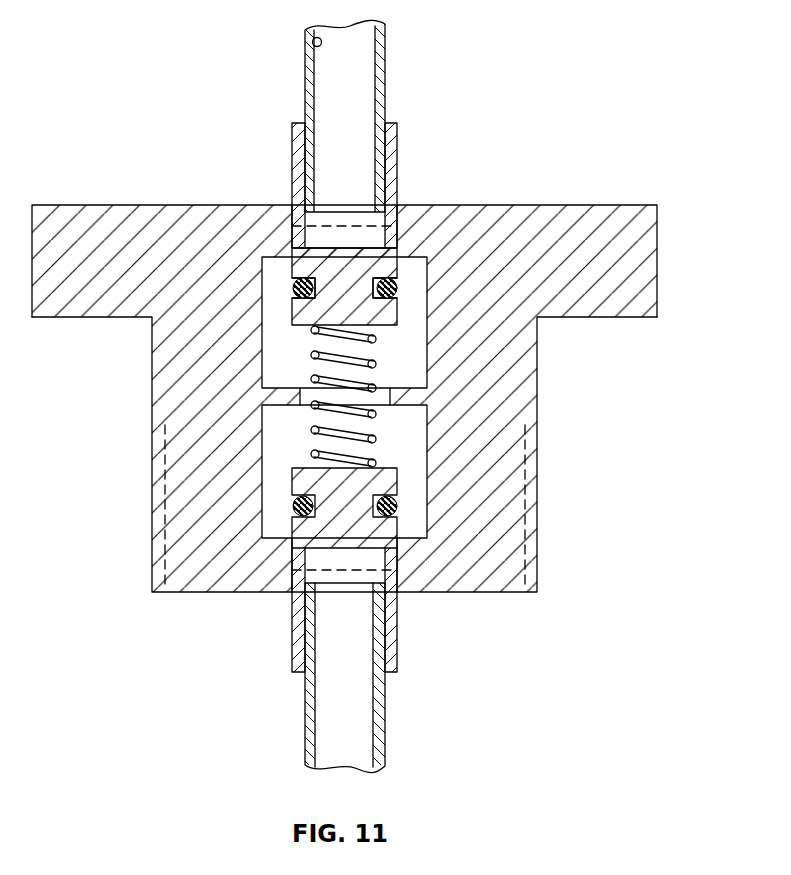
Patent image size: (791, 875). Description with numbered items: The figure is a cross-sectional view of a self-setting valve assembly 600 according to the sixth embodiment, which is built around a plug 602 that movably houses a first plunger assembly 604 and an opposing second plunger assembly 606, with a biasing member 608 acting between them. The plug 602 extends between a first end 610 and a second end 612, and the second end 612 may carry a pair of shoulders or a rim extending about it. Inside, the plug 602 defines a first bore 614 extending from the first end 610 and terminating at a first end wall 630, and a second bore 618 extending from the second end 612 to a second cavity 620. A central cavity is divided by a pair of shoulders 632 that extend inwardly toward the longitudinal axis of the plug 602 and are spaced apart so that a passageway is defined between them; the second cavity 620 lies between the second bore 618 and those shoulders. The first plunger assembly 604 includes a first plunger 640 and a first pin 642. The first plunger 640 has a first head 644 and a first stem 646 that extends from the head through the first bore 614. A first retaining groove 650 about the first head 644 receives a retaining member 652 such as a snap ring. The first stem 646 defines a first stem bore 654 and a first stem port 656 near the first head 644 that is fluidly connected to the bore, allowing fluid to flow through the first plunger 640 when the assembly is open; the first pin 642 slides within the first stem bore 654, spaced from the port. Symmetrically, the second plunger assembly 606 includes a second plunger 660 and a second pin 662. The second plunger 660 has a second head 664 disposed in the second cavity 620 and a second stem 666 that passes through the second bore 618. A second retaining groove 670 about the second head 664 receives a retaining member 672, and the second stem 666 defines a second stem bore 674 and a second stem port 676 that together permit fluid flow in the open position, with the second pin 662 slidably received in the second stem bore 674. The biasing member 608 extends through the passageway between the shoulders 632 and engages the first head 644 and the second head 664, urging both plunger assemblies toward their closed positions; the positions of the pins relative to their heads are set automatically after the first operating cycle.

The self-setting valve assembly 600 is at (577, 133).
The plug 602 is at (628, 192).
The first plunger assembly 604 is at (405, 680).
The second plunger assembly 606 is at (398, 108).
The biasing member 608 is at (305, 410).
The first end 610 is at (505, 593).
The second end 612 is at (160, 203).
The first bore 614 is at (400, 548).
The second bore 618 is at (292, 245).
The second cavity 620 is at (428, 293).
The first end wall 630 is at (430, 422).
The pair of shoulders 632 is at (430, 402).
The first plunger 640 is at (407, 628).
The first pin 642 is at (385, 722).
The first head 644 is at (315, 485).
The first stem 646 is at (298, 650).
The first retaining groove 650 is at (375, 490).
The retaining member 652 is at (398, 507).
The first stem bore 654 is at (373, 737).
The first stem port 656 is at (397, 577).
The second plunger 660 is at (260, 132).
The second pin 662 is at (380, 63).
The second head 664 is at (343, 298).
The second stem 666 is at (392, 147).
The second retaining groove 670 is at (320, 288).
The retaining member 672 is at (295, 292).
The second stem bore 674 is at (307, 35).
The second stem port 676 is at (385, 222).